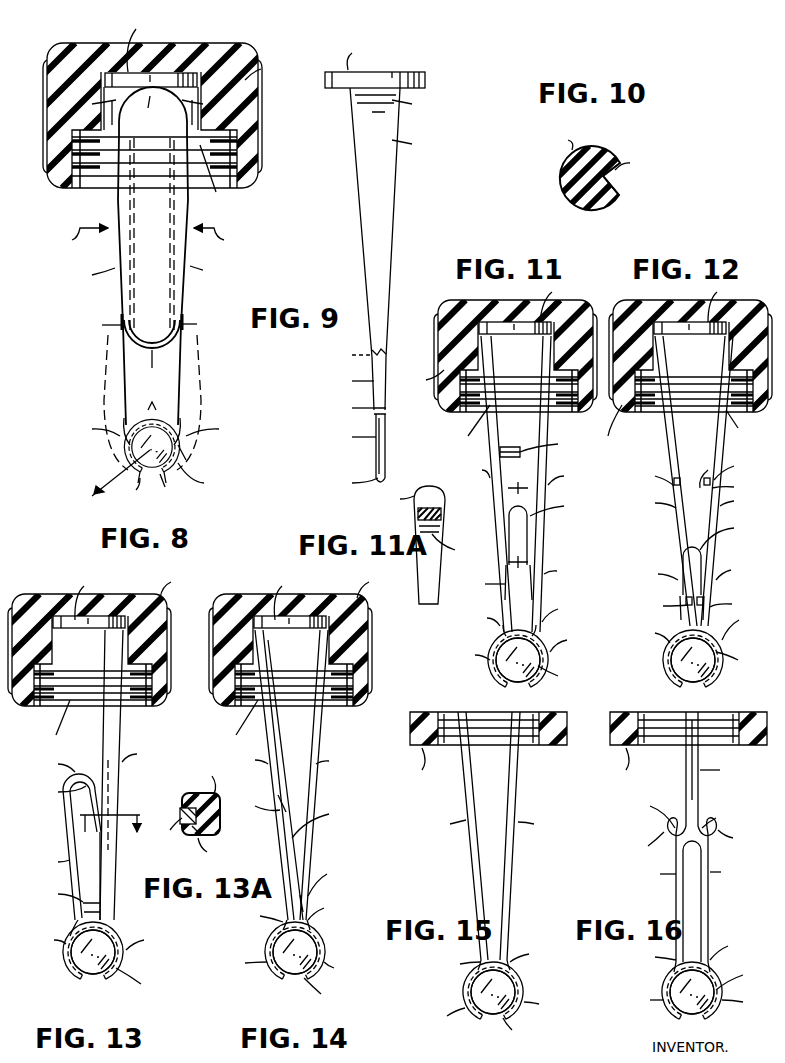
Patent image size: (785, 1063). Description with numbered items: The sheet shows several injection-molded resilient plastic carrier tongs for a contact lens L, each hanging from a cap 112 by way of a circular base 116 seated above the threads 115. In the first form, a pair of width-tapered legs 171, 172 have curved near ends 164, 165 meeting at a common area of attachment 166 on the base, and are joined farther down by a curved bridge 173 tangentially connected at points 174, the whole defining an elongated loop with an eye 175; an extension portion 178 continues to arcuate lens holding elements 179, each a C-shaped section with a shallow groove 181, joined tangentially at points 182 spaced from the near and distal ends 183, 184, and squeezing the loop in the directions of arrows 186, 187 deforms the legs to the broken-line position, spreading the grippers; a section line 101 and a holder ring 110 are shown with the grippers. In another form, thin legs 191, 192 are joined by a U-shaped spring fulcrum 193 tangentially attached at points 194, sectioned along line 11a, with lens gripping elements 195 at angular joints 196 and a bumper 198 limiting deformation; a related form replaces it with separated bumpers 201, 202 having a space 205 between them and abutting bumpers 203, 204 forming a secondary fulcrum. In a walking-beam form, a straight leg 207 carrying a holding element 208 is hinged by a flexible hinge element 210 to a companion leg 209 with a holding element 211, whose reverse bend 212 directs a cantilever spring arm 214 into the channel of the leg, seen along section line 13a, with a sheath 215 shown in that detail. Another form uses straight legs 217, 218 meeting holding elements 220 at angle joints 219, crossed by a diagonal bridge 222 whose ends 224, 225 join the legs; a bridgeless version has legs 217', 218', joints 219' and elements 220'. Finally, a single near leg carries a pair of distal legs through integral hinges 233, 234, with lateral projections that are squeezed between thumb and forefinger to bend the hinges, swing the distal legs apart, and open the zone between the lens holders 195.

In FIG. 8, the light assembly 101 is at (108, 473).
In FIG. 8, the lamp holder ring 110 is at (151, 445).
In FIG. 8, the cap 112 is at (202, 115).
In FIG. 11, the cap 112 is at (536, 356).
In FIG. 12, the cap 112 is at (657, 375).
In FIG. 13, the cap 112 is at (146, 636).
In FIG. 14, the cap 112 is at (311, 636).
In FIG. 15, the cap 112 is at (450, 768).
In FIG. 16, the cap 112 is at (650, 768).
In FIG. 8, the threads 115 is at (159, 169).
In FIG. 11, the threads 115 is at (508, 410).
In FIG. 12, the threads 115 is at (704, 405).
In FIG. 13, the threads 115 is at (89, 706).
In FIG. 14, the threads 115 is at (279, 706).
In FIG. 8, the circular base 116 is at (151, 69).
In FIG. 9, the circular base 116 is at (375, 60).
In FIG. 11, the circular base 116 is at (533, 303).
In FIG. 12, the circular base 116 is at (703, 303).
In FIG. 13, the circular base 116 is at (89, 597).
In FIG. 14, the circular base 116 is at (290, 597).
In FIG. 8, the near end 164 is at (87, 109).
In FIG. 8, the near end 165 is at (210, 109).
In FIG. 9, the near end 165 is at (401, 103).
In FIG. 8, the common area of attachment 166 is at (153, 111).
In FIG. 8, the leg 171 is at (94, 280).
In FIG. 8, the leg 172 is at (208, 280).
In FIG. 9, the leg 172 is at (398, 222).
In FIG. 8, the curved bridge 173 is at (152, 353).
In FIG. 9, the curved bridge 173 is at (353, 353).
In FIG. 8, the tangential connection points 174 is at (151, 323).
In FIG. 8, the eye 175 is at (152, 236).
In FIG. 9, the extension portion 178 is at (353, 383).
In FIG. 8, the lens holding elements 179 is at (175, 474).
In FIG. 10, the lens holding elements 179 is at (597, 168).
In FIG. 9, the shallow groove 181 is at (352, 446).
In FIG. 10, the shallow groove 181 is at (634, 173).
In FIG. 8, the connection points 182 is at (157, 402).
In FIG. 8, the near end 183 is at (153, 397).
In FIG. 9, the near end 183 is at (353, 405).
In FIG. 8, the distal end 184 is at (179, 489).
In FIG. 9, the distal end 184 is at (352, 481).
In FIG. 8, the arrow 186 is at (74, 240).
In FIG. 8, the arrow 187 is at (226, 240).
In FIG. 11A, the leg 191 is at (407, 545).
In FIG. 11, the leg 191 is at (482, 484).
In FIG. 12, the leg 191 is at (660, 481).
In FIG. 11, the leg 192 is at (565, 484).
In FIG. 12, the leg 192 is at (735, 481).
In FIG. 11A, the U-shaped connecting fulcrum 193 is at (454, 534).
In FIG. 11, the U-shaped connecting fulcrum 193 is at (554, 530).
In FIG. 12, the U-shaped connecting fulcrum 193 is at (726, 556).
In FIG. 11, the attachment points 194 is at (522, 579).
In FIG. 12, the attachment points 194 is at (696, 589).
In FIG. 11, the lens gripping elements 195 is at (522, 657).
In FIG. 12, the lens gripping elements 195 is at (698, 647).
In FIG. 16, the lens gripping elements 195 is at (698, 990).
In FIG. 11, the angular joints 196 is at (525, 616).
In FIG. 16, the angular joints 196 is at (693, 952).
In FIG. 11, the bumper 198 is at (547, 444).
In FIG. 12, the bumper 201 is at (651, 474).
In FIG. 12, the bumper 202 is at (736, 485).
In FIG. 12, the bumper 203 is at (661, 604).
In FIG. 12, the bumper 204 is at (732, 601).
In FIG. 12, the space 205 is at (735, 471).
In FIG. 13, the straight leg 207 is at (136, 775).
In FIG. 13A, the straight leg 207 is at (197, 798).
In FIG. 13, the lens holding element 208 is at (121, 950).
In FIG. 13, the companion leg 209 is at (63, 855).
In FIG. 13, the flexible hinge element 210 is at (63, 876).
In FIG. 13, the lens holding element 211 is at (50, 934).
In FIG. 13, the reverse bend 212 is at (60, 771).
In FIG. 13A, the cantilever spring arm portion 214 is at (173, 827).
In FIG. 13A, the sheath 215 is at (217, 844).
In FIG. 14, the straight leg 217 is at (258, 775).
In FIG. 14, the straight leg 218 is at (332, 775).
In FIG. 13, the angle joints 219 is at (58, 790).
In FIG. 14, the angle joints 219 is at (293, 912).
In FIG. 14, the lens holding elements 220 is at (291, 950).
In FIG. 14, the diagonal bridge 222 is at (316, 780).
In FIG. 14, the bridge end 224 is at (259, 799).
In FIG. 14, the bridge end 225 is at (331, 886).
In FIG. 15, the straight leg 217' is at (452, 836).
In FIG. 15, the straight leg 218' is at (537, 836).
In FIG. 15, the angle joints 219' is at (497, 957).
In FIG. 15, the lens holding elements 220' is at (496, 994).
In FIG. 16, the hinge section 233 is at (725, 817).
In FIG. 16, the hinge section 234 is at (652, 812).
In FIG. 11, the section line 11a is at (521, 524).
In FIG. 13, the section line 13a is at (120, 811).
In FIG. 11, the lens L is at (533, 661).
In FIG. 12, the lens L is at (710, 660).
In FIG. 13, the lens L is at (112, 961).
In FIG. 14, the lens L is at (303, 966).
In FIG. 15, the lens L is at (496, 1006).
In FIG. 16, the lens L is at (712, 988).